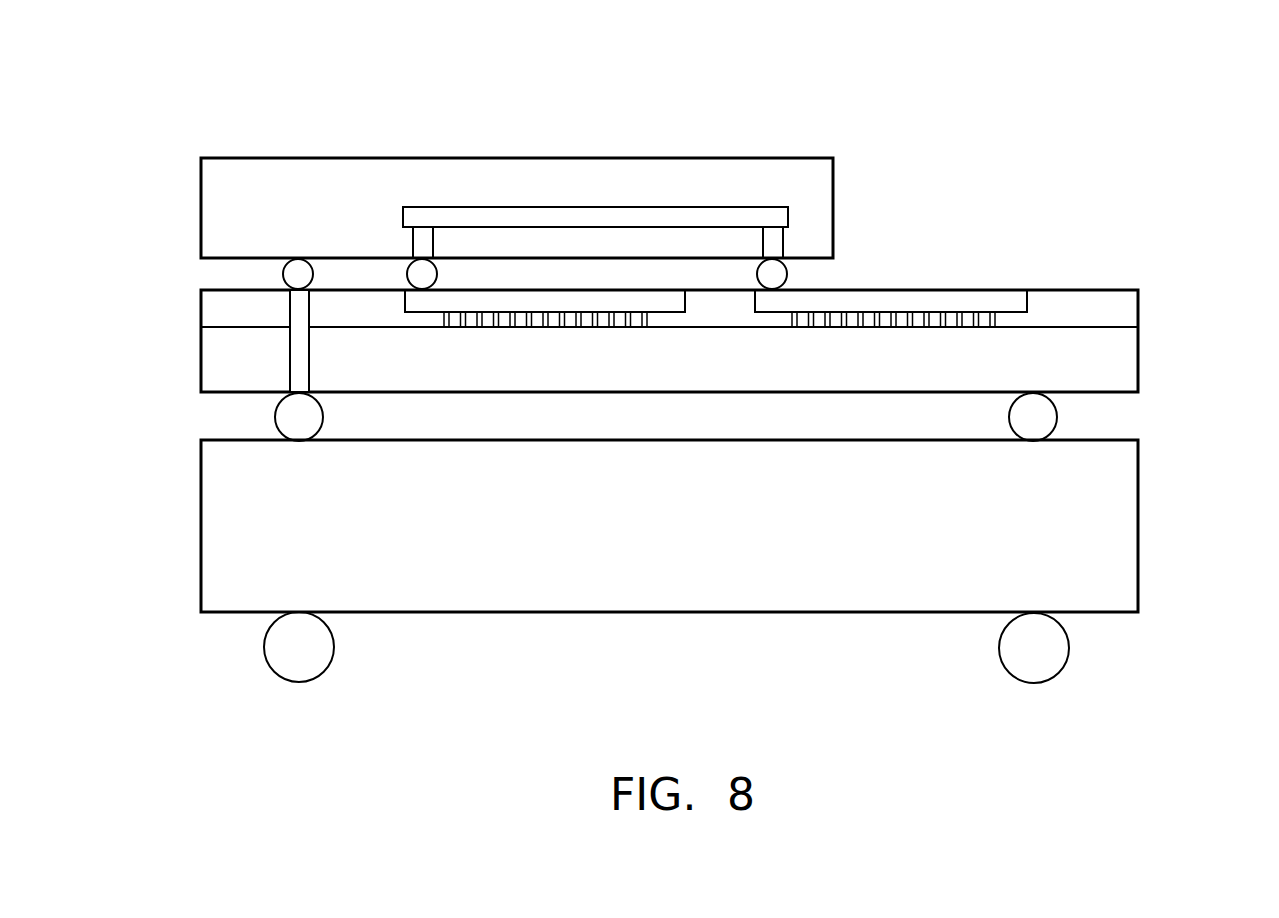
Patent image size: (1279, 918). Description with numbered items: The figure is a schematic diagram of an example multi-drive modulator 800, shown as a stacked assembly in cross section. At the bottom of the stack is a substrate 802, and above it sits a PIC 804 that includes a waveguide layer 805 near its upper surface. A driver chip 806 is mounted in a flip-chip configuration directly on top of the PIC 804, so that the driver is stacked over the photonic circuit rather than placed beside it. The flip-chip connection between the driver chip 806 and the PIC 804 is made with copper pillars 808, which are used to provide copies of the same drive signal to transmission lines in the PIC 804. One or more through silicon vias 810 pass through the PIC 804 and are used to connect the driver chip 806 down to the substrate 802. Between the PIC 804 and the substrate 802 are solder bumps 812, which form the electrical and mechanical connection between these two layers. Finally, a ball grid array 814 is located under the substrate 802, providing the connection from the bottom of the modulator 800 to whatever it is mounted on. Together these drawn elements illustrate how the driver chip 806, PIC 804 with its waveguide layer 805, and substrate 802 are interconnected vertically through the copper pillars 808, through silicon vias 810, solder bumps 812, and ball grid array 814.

The modulator 800 is at (1010, 91).
The substrate 802 is at (669, 526).
The PIC 804 is at (669, 341).
The waveguide layer 805 is at (1150, 327).
The driver chip 806 is at (517, 208).
The copper pillars 808 is at (437, 272).
The through silicon vias 810 is at (290, 352).
The solder bumps 812 is at (275, 411).
The ball grid array (BGA) 814 is at (265, 640).